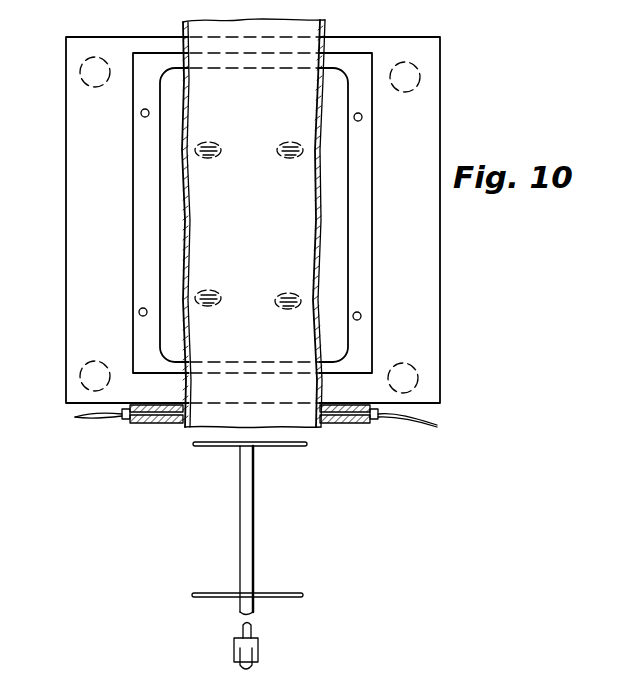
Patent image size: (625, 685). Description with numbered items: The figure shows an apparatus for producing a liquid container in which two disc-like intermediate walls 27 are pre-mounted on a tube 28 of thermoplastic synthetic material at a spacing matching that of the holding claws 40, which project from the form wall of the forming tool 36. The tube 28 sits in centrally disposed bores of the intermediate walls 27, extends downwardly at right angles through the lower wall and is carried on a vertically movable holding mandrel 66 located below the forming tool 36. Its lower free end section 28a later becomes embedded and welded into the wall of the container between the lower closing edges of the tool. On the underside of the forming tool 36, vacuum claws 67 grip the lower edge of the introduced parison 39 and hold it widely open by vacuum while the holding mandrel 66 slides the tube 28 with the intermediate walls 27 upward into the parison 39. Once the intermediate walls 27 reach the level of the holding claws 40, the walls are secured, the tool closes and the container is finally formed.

The parison 39 is at (327, 32).
The forming tool 36 is at (360, 165).
The holding claws 40 is at (290, 160).
The vacuum claws 67 is at (158, 424).
The intermediate walls 27 is at (298, 446).
The tube 28 is at (247, 501).
The free end section 28a is at (234, 648).
The holding mandrel 66 is at (255, 656).